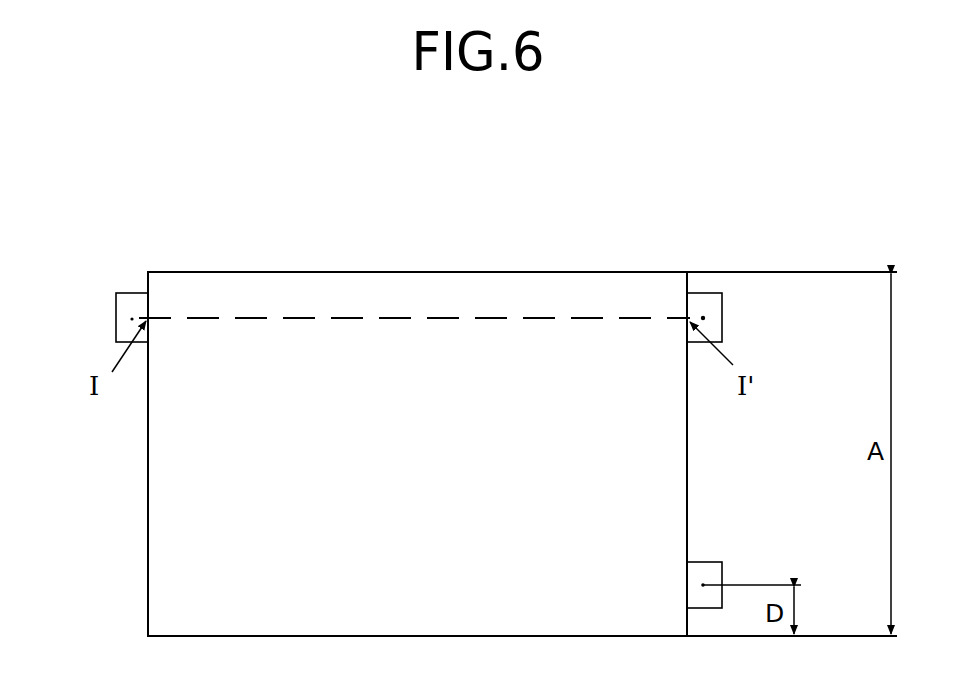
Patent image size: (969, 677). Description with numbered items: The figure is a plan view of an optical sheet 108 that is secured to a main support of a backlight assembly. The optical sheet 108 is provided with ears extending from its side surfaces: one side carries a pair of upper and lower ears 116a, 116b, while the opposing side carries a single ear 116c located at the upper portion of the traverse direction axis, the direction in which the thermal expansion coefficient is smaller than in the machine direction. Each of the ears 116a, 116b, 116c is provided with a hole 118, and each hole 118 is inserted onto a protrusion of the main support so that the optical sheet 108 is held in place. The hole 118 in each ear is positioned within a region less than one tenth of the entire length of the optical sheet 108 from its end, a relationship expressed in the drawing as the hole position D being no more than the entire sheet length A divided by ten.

The optical sheet 108 is at (148, 272).
The upper ear 116a is at (722, 293).
The lower ear 116b is at (722, 562).
The ear 116c is at (122, 330).
The hole 118 is at (706, 318).